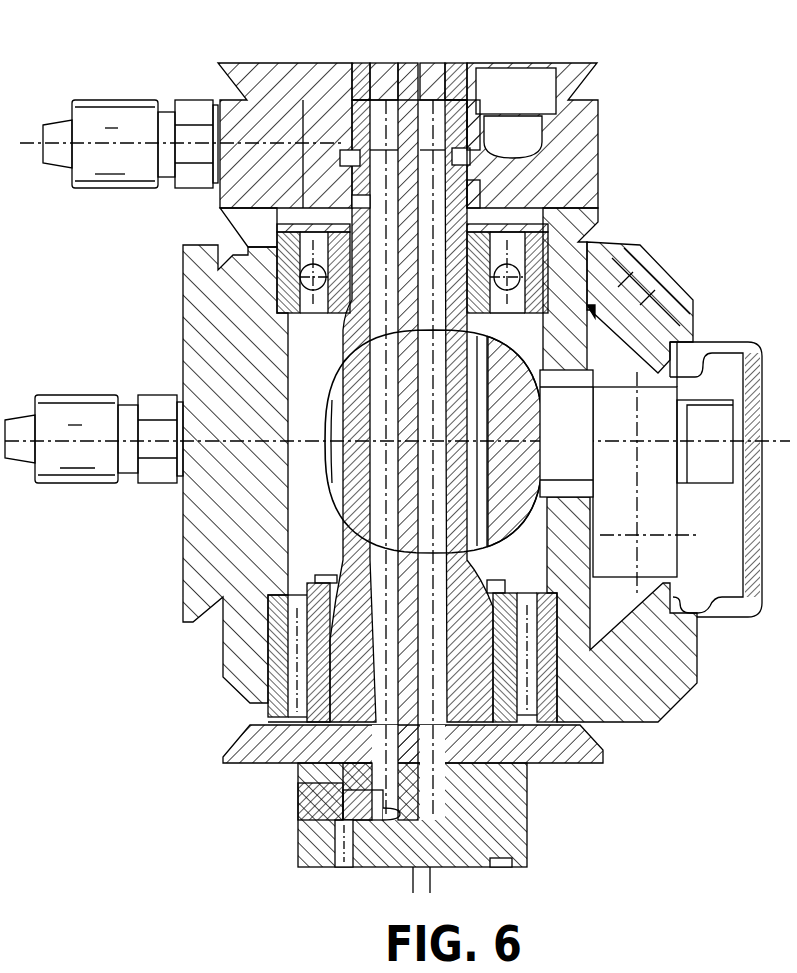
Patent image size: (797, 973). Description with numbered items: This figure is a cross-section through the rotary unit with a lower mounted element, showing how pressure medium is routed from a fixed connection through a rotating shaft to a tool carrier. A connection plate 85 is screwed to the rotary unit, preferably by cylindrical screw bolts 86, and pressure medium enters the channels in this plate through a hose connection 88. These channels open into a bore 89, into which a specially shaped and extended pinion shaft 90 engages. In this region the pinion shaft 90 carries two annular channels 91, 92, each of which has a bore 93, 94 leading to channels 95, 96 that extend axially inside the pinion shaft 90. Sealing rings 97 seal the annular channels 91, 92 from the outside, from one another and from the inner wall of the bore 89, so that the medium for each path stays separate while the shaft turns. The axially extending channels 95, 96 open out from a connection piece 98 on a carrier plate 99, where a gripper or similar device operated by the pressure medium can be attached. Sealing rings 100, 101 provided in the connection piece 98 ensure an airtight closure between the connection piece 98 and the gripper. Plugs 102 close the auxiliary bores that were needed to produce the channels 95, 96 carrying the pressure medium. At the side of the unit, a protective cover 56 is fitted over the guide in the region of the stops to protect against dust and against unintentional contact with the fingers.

The protective cover 56 is at (740, 607).
The connection plate 85 is at (312, 75).
The cylindrical screw bolts 86 is at (525, 90).
The hose connection 88 is at (120, 122).
The bore 89 is at (363, 65).
The pinion shaft 90 is at (322, 523).
The annular channel 91 is at (350, 110).
The annular channel 92 is at (480, 163).
The bore 93 is at (480, 112).
The bore 94 is at (350, 160).
The channel 95 is at (473, 192).
The channel 96 is at (377, 203).
The sealing rings 97 is at (476, 113).
The connection piece 98 is at (505, 815).
The carrier plate 99 is at (570, 742).
The sealing ring 100 is at (503, 868).
The sealing ring 101 is at (372, 868).
The plugs 102 is at (400, 63).